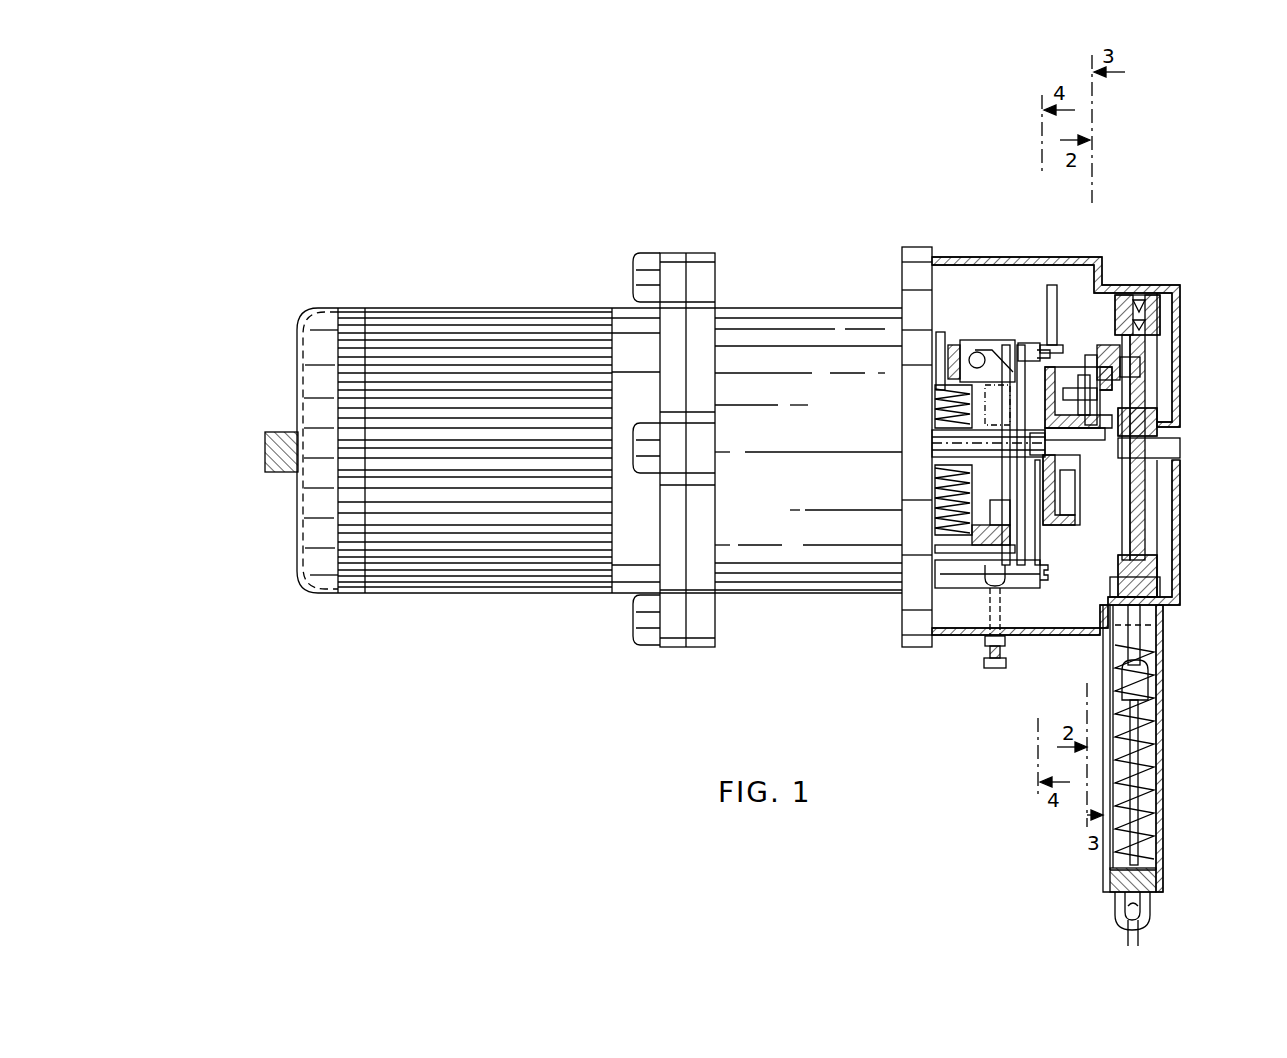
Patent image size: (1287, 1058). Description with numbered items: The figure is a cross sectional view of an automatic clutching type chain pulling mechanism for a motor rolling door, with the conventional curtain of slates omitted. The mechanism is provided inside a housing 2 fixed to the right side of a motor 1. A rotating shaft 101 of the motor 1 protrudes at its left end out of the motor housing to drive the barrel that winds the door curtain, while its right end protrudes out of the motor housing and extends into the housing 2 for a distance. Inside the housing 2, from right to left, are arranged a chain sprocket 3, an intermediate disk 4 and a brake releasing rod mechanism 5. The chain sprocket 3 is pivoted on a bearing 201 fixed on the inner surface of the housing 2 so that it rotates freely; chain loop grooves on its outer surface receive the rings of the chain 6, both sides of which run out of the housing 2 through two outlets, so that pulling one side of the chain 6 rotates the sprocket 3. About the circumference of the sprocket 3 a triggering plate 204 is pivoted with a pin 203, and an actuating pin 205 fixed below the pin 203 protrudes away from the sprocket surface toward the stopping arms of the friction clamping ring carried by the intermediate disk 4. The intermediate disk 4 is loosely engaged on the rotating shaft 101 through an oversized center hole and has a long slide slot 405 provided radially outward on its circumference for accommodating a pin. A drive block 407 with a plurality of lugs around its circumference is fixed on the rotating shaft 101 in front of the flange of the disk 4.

The motor 1 is at (560, 307).
The rotating shaft 101 is at (278, 432).
The housing 2 is at (960, 257).
The brake releasing rod mechanism 5 is at (980, 340).
The long slide slot 405 is at (1040, 345).
The intermediate disk 4 is at (1080, 363).
The actuating pin 205 is at (1090, 355).
The triggering plate 204 is at (1113, 283).
The chain sprocket 3 is at (1178, 362).
The pin 203 is at (1123, 362).
The bearing 201 is at (1155, 447).
The drive block 407 is at (1100, 480).
The chain 6 is at (1148, 903).